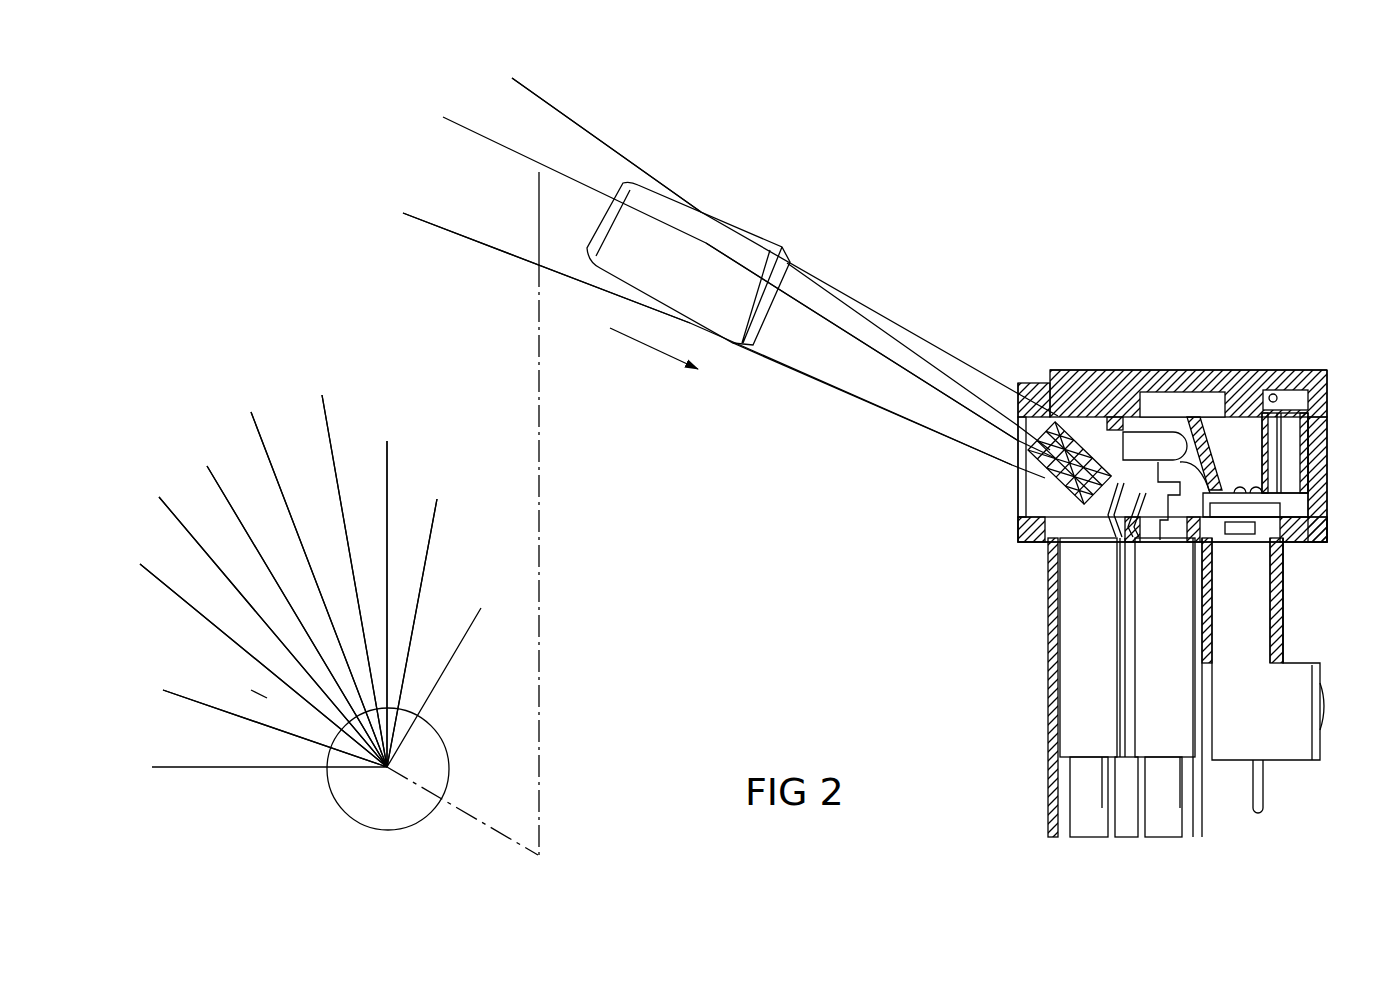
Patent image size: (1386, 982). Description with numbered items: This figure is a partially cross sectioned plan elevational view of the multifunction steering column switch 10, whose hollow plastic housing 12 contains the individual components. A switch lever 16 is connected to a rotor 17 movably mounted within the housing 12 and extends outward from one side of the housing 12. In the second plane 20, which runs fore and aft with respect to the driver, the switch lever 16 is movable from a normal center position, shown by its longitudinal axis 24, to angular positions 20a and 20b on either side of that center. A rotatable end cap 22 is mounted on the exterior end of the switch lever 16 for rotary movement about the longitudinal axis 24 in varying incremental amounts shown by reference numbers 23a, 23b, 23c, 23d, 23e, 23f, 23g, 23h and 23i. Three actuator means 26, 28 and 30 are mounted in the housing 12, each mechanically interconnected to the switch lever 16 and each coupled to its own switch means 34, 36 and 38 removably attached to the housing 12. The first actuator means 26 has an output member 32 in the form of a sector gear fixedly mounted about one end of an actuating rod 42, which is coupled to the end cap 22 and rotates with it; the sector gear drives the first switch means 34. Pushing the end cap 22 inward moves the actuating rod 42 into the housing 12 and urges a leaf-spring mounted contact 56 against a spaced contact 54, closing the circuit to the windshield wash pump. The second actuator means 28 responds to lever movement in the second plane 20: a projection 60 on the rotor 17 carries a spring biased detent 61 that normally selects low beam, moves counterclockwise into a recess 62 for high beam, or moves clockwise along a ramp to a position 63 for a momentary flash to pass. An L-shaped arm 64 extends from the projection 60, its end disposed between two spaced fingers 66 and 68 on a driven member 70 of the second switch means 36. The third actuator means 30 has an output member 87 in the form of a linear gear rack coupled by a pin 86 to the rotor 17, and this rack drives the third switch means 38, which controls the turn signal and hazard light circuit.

The multifunction steering column switch 10 is at (1020, 300).
The housing 12 is at (1150, 415).
The switch lever 16 is at (812, 308).
The rotor 17 is at (1105, 370).
The second plane 20 is at (583, 128).
The angular position 20a is at (511, 82).
The angular position 20b is at (442, 119).
The rotatable end cap 22 is at (423, 742).
The incremental rotation amount 23a is at (168, 697).
The incremental rotation amount 23b is at (218, 640).
The incremental rotation amount 23c is at (176, 532).
The incremental rotation amount 23d is at (163, 501).
The incremental rotation amount 23e is at (271, 480).
The incremental rotation amount 23f is at (257, 414).
The incremental rotation amount 23g is at (338, 447).
The incremental rotation amount 23h is at (390, 499).
The incremental rotation amount 23i is at (421, 590).
The longitudinal axis 24 is at (387, 768).
The first actuator means 26 is at (1060, 425).
The second actuator means 28 is at (1124, 424).
The third actuator means 30 is at (1240, 425).
The output member 32 is at (1095, 525).
The first switch means 34 is at (1072, 608).
The second switch means 36 is at (1150, 727).
The third switch means 38 is at (1257, 653).
The actuating rod 42 is at (1037, 447).
The contact 54 is at (1158, 548).
The contact 56 is at (1097, 485).
The projection 60 is at (1175, 468).
The spring biased detent 61 is at (1195, 440).
The recess 62 is at (1205, 470).
The flash-to-pass position 63 is at (1232, 470).
The arm 64 is at (1187, 530).
The finger 66 is at (1285, 450).
The finger 68 is at (1207, 545).
The driven member 70 is at (1190, 540).
The pin 86 is at (1262, 480).
The output member 87 is at (1255, 510).